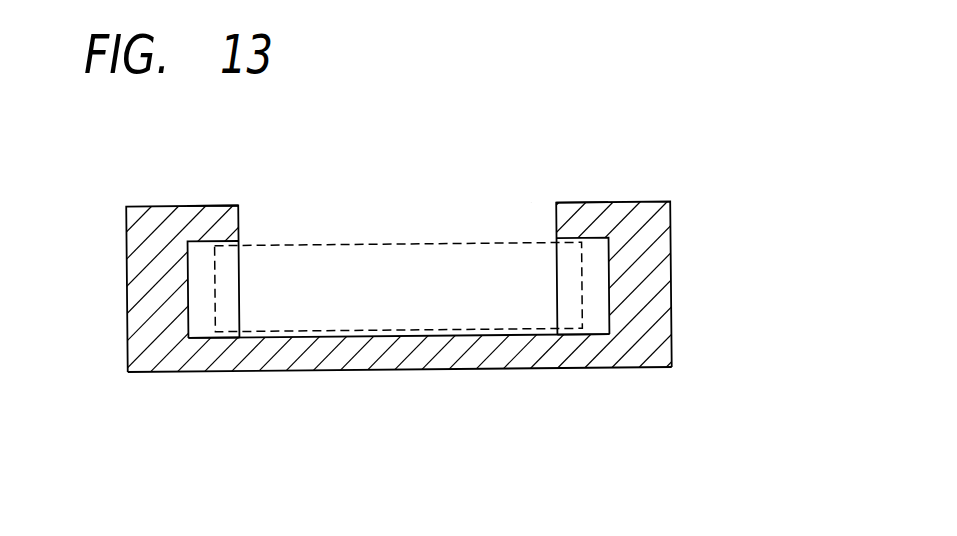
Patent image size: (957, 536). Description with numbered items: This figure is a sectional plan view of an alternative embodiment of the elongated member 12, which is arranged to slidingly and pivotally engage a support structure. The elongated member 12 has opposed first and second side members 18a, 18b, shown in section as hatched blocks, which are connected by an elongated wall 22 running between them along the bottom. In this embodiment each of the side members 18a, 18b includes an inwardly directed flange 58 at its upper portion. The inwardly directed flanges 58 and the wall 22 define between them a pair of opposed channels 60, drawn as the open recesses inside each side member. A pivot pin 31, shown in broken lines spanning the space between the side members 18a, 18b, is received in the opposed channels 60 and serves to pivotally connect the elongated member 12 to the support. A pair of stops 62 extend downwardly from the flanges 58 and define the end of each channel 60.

The elongated member 12 is at (768, 156).
The first side member 18a is at (145, 286).
The second side member 18b is at (662, 295).
The elongated wall 22 is at (512, 355).
The pivot pin 31 is at (383, 265).
The inwardly directed flange 58 is at (233, 223).
The channel 60 is at (203, 267).
The stop 62 is at (197, 320).